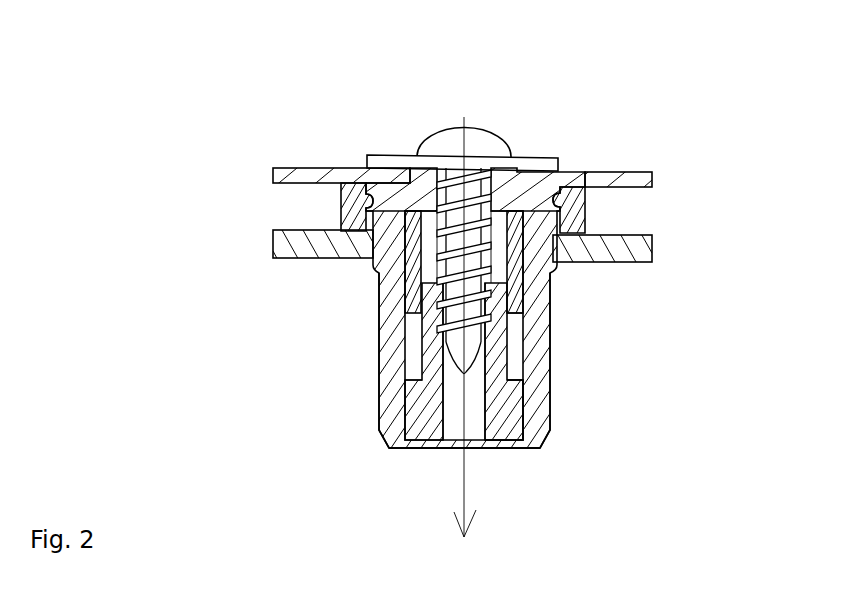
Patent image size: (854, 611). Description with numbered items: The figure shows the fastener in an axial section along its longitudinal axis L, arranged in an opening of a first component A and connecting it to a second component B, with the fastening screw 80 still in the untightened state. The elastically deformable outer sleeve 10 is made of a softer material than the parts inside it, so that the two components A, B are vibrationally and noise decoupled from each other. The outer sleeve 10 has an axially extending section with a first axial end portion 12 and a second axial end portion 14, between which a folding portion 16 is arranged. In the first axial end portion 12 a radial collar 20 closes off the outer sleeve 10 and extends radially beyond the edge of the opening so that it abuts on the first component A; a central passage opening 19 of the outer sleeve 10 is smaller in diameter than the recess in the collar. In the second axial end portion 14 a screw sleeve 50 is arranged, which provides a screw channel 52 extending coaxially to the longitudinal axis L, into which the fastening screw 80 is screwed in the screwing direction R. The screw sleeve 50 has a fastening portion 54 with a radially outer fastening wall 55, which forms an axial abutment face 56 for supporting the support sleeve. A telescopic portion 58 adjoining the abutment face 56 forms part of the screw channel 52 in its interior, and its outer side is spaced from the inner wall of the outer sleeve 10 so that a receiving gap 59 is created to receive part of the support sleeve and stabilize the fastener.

The outer sleeve 10 is at (463, 357).
The first axial end portion 12 is at (607, 263).
The second axial end portion 14 is at (533, 397).
The folding portion 16 is at (540, 333).
The central passage opening 19 is at (408, 325).
The radial collar 20 is at (587, 210).
The screw sleeve 50 is at (415, 391).
The screw channel 52 is at (441, 414).
The fastening portion 54 is at (530, 406).
The fastening wall 55 is at (523, 418).
The axial abutment face 56 is at (526, 371).
The telescopic portion 58 is at (410, 363).
The receiving gap 59 is at (513, 333).
The fastening screw 80 is at (436, 133).
The first component A is at (270, 243).
The second component B is at (270, 173).
The longitudinal axis L is at (466, 118).
The screwing direction R is at (483, 508).